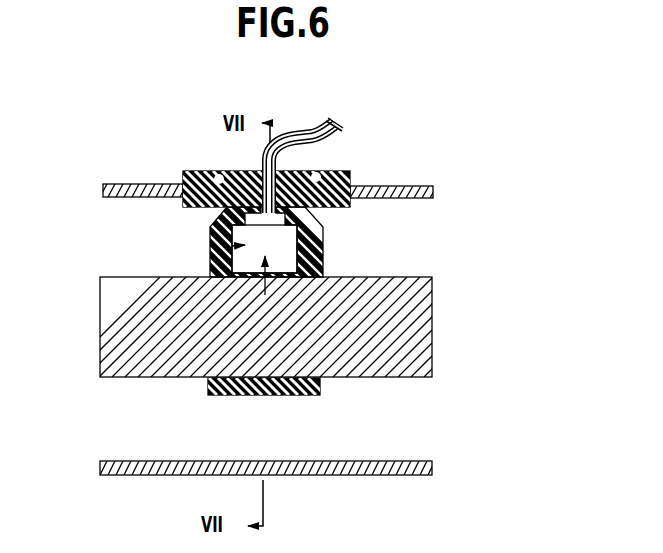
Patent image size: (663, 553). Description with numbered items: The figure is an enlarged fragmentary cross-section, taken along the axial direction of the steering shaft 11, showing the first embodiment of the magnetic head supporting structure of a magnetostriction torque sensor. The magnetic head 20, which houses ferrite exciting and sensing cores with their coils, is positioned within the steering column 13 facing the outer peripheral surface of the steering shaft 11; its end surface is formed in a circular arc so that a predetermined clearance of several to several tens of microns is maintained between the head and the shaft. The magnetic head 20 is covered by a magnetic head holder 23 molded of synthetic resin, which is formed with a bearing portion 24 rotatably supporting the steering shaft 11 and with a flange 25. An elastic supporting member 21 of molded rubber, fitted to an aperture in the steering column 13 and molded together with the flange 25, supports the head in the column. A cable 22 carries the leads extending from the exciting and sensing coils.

The steering shaft 11 is at (388, 357).
The steering column 13 is at (407, 186).
The magnetic head 20 is at (212, 230).
The elastic supporting member 21 is at (219, 178).
The cable 22 is at (298, 142).
The magnetic head holder 23 is at (210, 253).
The bearing portion 24 is at (325, 283).
The flange 25 is at (298, 172).